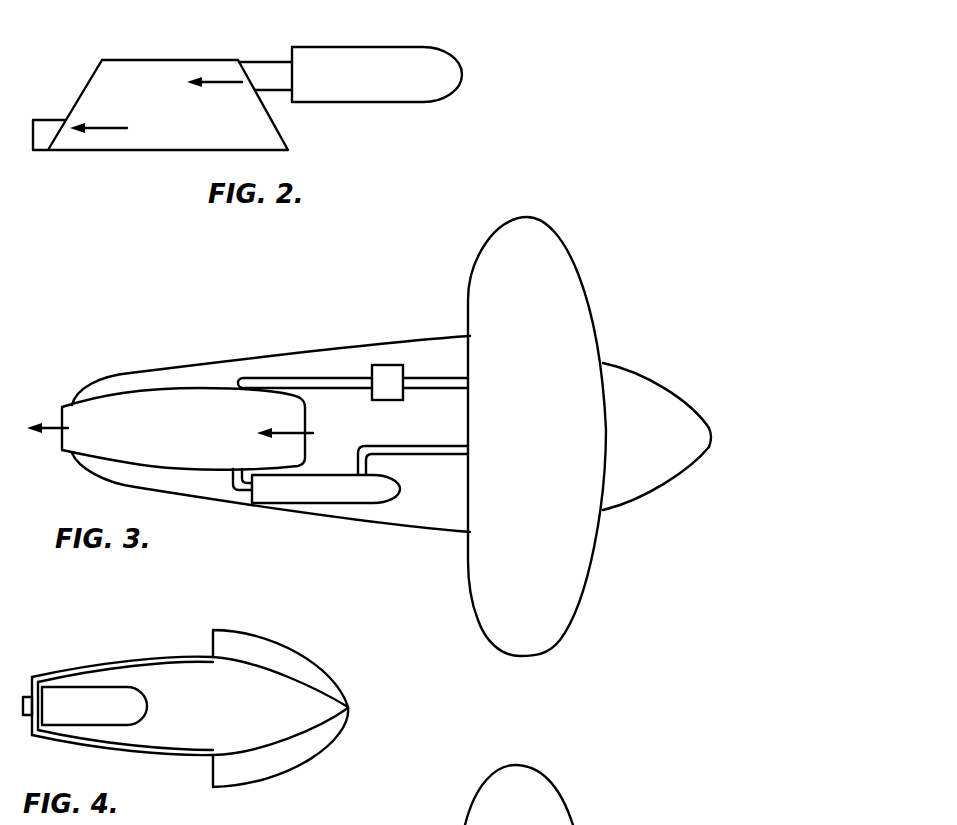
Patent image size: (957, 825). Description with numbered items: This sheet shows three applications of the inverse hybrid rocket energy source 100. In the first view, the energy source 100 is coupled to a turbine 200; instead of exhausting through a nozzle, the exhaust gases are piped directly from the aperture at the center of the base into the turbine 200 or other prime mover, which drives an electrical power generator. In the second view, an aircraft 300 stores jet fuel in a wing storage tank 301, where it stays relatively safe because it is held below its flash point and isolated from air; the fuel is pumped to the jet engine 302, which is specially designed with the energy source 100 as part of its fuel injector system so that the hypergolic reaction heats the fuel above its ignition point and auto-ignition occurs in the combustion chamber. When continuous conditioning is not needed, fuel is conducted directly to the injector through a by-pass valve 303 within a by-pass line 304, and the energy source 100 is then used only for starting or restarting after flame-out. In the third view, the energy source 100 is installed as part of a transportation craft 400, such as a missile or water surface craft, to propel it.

In FIG. 2, the energy source 100 is at (358, 92).
In FIG. 3, the energy source 100 is at (373, 497).
In FIG. 4, the energy source 100 is at (97, 697).
In FIG. 2, the turbine 200 is at (153, 142).
In FIG. 3, the aircraft 300 is at (620, 542).
In FIG. 3, the wing storage tank 301 is at (480, 563).
In FIG. 3, the jet engine 302 is at (178, 403).
In FIG. 3, the by-pass valve 303 is at (384, 398).
In FIG. 3, the by-pass line 304 is at (285, 380).
In FIG. 4, the transportation craft 400 is at (366, 733).